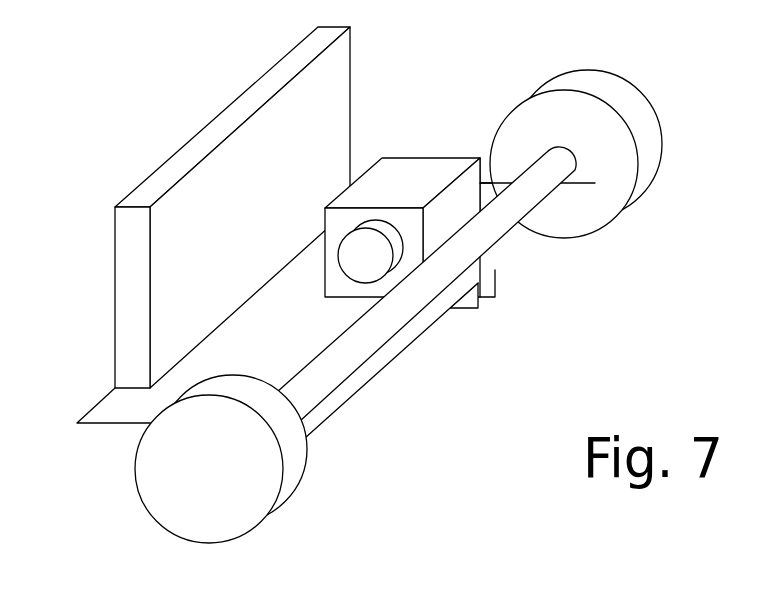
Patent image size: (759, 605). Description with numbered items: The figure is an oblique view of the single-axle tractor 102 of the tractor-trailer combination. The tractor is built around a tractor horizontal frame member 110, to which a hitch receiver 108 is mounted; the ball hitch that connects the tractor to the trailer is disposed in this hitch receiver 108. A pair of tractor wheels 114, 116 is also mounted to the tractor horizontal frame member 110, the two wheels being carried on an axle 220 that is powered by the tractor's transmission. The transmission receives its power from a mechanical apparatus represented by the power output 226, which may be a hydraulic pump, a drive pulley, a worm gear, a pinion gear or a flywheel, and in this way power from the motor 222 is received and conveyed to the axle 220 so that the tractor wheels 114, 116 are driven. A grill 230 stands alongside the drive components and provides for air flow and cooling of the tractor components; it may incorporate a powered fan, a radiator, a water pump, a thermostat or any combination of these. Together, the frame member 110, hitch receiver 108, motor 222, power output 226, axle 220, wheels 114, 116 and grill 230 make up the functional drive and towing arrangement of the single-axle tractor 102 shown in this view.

The single-axle tractor 102 is at (128, 107).
The grill 230 is at (152, 173).
The hitch receiver 108 is at (479, 309).
The motor 222 is at (400, 157).
The power output 226 is at (349, 285).
The tractor wheel 116 is at (580, 70).
The tractor horizontal frame member 110 is at (362, 390).
The axle 220 is at (405, 327).
The tractor wheel 114 is at (153, 510).